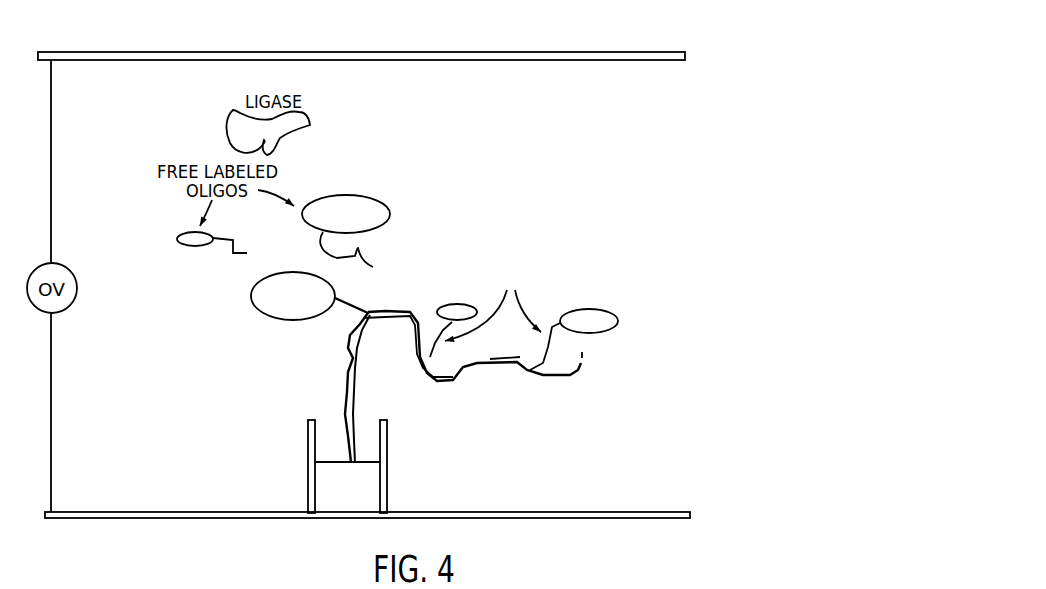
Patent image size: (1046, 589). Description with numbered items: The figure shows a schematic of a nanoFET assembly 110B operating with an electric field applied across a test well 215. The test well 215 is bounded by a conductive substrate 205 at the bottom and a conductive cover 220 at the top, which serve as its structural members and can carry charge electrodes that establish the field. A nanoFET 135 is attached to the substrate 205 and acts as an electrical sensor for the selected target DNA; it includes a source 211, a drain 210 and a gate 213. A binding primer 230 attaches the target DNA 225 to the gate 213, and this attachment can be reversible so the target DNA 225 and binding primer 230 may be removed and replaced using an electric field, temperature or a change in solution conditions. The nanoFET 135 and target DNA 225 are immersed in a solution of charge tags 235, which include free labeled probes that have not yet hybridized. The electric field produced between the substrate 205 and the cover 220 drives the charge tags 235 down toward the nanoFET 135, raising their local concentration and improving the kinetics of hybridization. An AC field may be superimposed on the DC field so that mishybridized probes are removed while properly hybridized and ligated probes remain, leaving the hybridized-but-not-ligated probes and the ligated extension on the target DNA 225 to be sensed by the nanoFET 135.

The nanoFET assembly 110B is at (121, 43).
The cover 220 is at (685, 55).
The test well 215 is at (653, 198).
The charge tags 235 is at (384, 202).
The target DNA 225 is at (570, 376).
The binding primer 230 is at (344, 451).
The nanoFET 135 is at (397, 434).
The gate 213 is at (375, 479).
The source 211 is at (242, 482).
The drain 210 is at (440, 486).
The substrate 205 is at (692, 515).